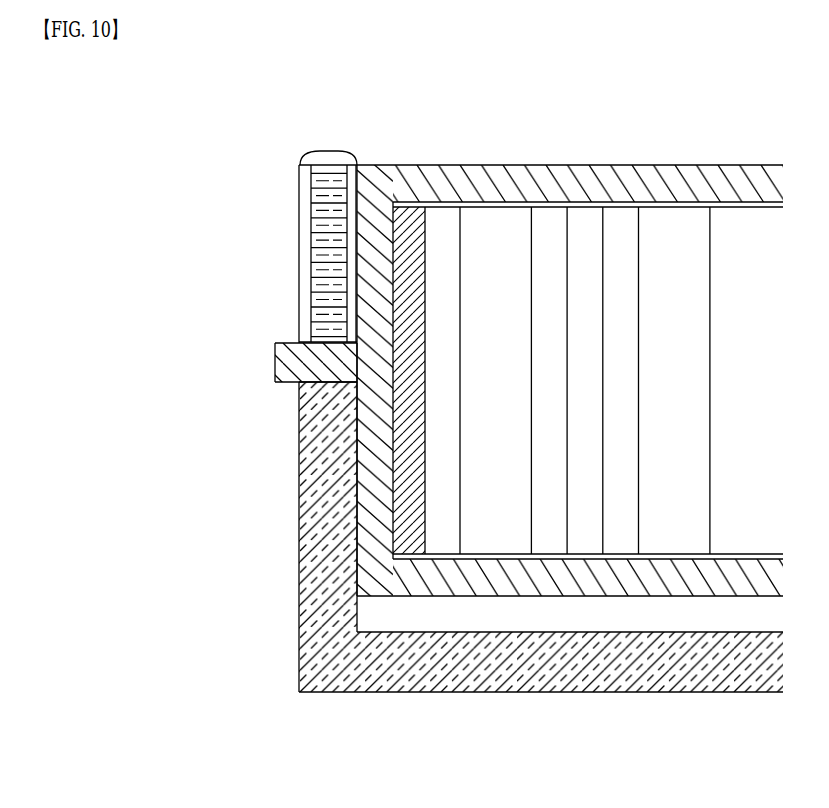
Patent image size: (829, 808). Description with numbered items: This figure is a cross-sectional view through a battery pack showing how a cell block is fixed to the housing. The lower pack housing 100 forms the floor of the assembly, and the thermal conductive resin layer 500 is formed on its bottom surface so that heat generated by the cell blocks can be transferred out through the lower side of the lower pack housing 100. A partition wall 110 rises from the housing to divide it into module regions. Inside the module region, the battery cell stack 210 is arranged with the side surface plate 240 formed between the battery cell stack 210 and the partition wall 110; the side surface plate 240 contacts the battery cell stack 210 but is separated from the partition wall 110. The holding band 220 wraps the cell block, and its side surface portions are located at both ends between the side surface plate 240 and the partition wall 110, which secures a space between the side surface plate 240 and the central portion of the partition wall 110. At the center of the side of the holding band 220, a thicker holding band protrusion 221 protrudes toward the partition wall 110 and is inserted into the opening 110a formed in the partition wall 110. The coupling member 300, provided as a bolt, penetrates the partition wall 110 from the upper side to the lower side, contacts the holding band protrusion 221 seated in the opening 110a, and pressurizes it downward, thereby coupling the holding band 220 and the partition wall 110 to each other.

The lower pack housing 100 is at (507, 666).
The partition wall 110 is at (322, 509).
The opening 110a is at (297, 344).
The battery cell stack 210 is at (585, 252).
The holding band 220 is at (398, 185).
The holding band protrusion 221 is at (290, 363).
The side surface plate 240 is at (407, 268).
The coupling member 300 is at (327, 151).
The thermal conductive resin layer 500 is at (653, 610).